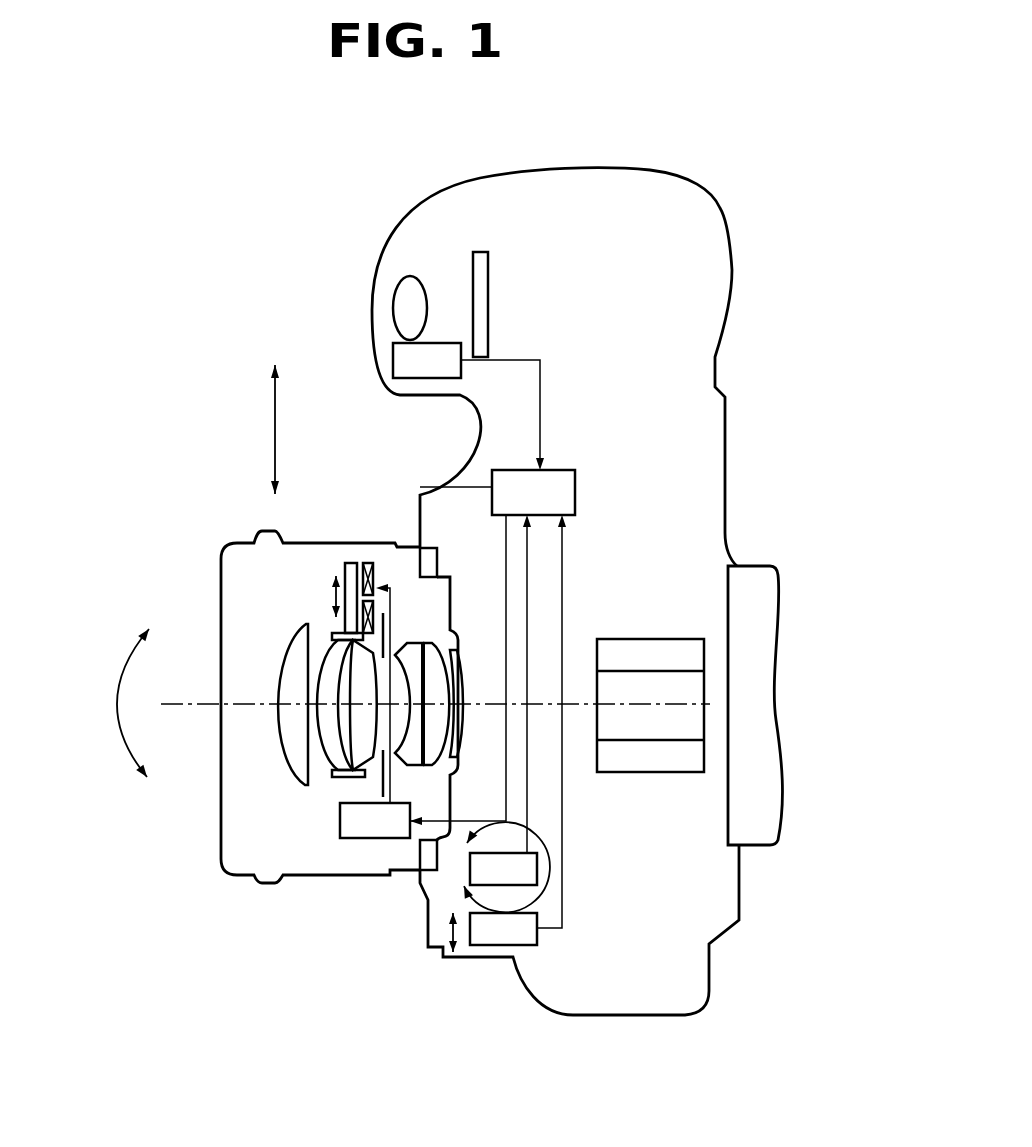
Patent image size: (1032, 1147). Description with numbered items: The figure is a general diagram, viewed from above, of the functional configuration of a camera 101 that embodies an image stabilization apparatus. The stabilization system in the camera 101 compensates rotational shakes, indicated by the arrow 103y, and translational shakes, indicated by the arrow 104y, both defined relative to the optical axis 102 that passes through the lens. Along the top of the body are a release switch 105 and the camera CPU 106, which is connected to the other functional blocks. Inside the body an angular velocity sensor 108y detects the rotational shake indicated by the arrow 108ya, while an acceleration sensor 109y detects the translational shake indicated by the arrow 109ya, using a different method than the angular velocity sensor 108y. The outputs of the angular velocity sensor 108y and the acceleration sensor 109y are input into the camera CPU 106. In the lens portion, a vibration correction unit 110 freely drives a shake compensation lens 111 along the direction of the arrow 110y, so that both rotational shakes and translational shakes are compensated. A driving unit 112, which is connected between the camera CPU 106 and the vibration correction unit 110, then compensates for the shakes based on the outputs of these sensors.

The camera 101 is at (732, 288).
The optical axis 102 is at (174, 704).
The rotational shake arrow 103y is at (122, 674).
The translational shake arrow 104y is at (275, 440).
The release switch 105 is at (394, 310).
The camera CPU 106 is at (492, 487).
The angular velocity sensor 108y is at (537, 870).
The rotational shake detection arrow 108ya is at (542, 848).
The acceleration sensor 109y is at (483, 945).
The translational shake detection arrow 109ya is at (445, 932).
The vibration correction unit 110 is at (345, 568).
The shake compensation lens drive direction arrow 110y is at (336, 598).
The shake compensation lens 111 is at (317, 686).
The driving unit 112 is at (350, 838).